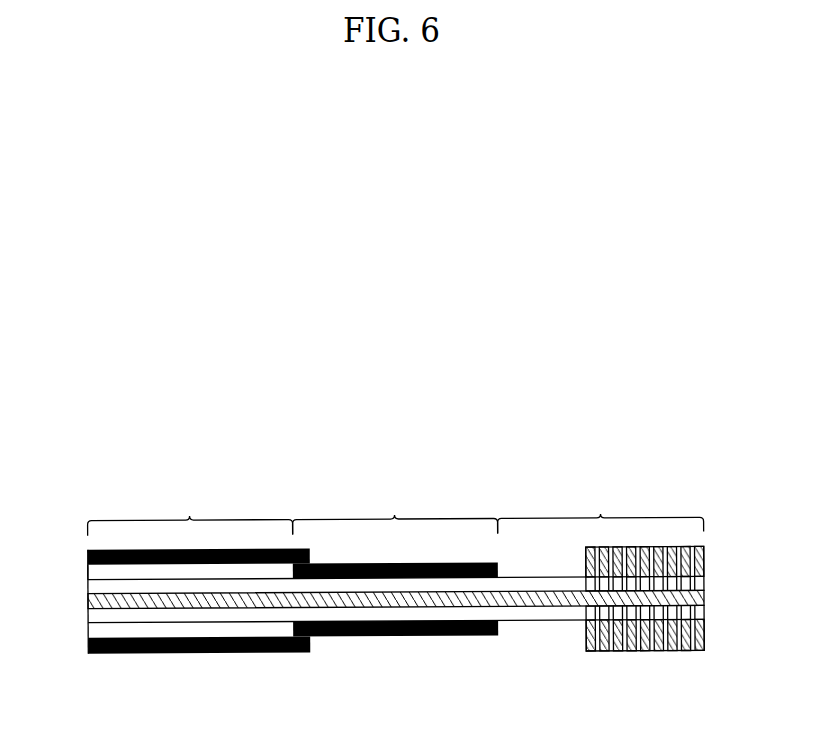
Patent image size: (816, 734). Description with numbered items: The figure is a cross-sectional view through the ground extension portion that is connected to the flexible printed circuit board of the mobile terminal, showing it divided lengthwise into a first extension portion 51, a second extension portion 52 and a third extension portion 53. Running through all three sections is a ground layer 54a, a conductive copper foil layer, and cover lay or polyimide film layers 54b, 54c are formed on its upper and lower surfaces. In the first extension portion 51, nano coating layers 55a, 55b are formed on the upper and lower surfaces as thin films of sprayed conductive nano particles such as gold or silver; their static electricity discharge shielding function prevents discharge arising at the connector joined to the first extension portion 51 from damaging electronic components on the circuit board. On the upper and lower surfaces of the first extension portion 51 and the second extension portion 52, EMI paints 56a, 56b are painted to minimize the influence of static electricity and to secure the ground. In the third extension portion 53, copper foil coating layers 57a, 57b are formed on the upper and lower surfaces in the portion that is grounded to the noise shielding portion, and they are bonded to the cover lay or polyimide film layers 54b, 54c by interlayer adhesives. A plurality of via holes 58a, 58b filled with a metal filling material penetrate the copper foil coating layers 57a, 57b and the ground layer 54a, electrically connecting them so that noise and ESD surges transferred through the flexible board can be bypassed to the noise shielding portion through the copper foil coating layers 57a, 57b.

The first extension portion 51 is at (189, 513).
The second extension portion 52 is at (394, 510).
The third extension portion 53 is at (600, 510).
The ground layer 54a is at (705, 598).
The cover lay or polyimide film layer 54b is at (705, 585).
The cover lay or polyimide film layer 54c is at (705, 615).
The nano coating layer 55a is at (88, 572).
The nano coating layer 55b is at (88, 630).
The EMI paint 56a is at (88, 556).
The EMI paint 56b is at (88, 647).
The copper foil coating layer 57a is at (705, 563).
The copper foil coating layer 57b is at (705, 634).
The via hole 58a is at (648, 549).
The via hole 58b is at (648, 652).